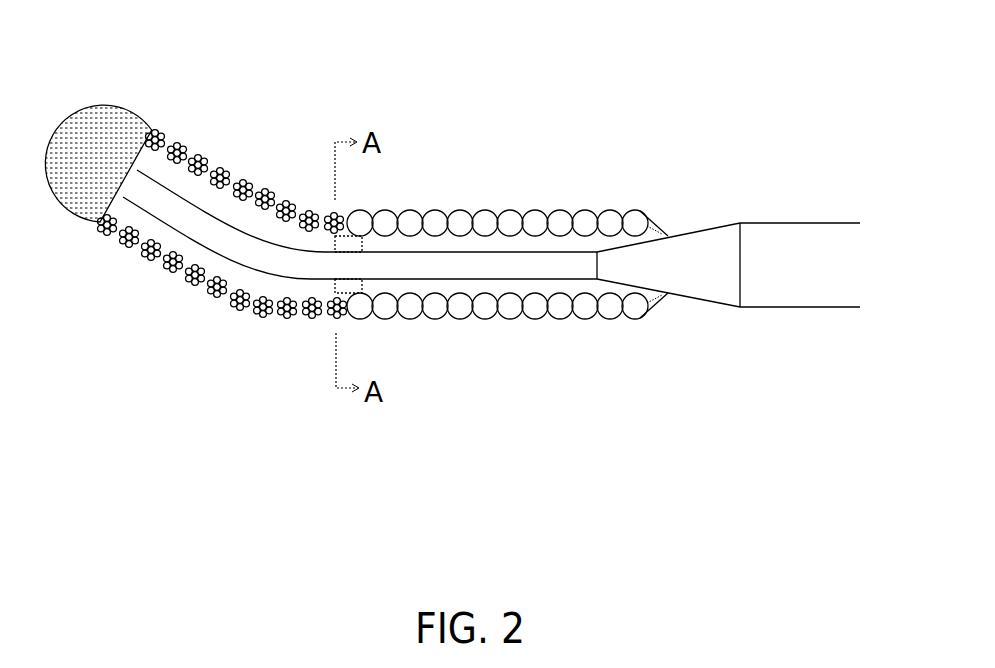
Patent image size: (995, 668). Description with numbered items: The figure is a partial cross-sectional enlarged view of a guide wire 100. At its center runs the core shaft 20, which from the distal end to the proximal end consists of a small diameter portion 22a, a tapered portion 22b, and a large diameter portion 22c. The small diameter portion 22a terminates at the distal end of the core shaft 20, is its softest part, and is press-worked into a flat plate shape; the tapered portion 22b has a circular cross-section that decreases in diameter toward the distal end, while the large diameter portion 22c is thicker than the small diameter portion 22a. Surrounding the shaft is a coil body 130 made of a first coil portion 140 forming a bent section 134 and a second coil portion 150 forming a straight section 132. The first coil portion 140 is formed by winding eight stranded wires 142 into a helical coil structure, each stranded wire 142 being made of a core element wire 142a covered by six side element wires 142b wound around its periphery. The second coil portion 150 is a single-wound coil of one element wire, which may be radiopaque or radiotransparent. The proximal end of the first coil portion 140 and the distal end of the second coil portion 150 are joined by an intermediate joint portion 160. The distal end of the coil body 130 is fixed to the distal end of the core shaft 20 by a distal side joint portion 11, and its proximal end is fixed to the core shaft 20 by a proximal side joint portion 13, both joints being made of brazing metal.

The guide wire 100 is at (590, 147).
The distal side joint portion 11 is at (88, 106).
The core shaft 20 is at (782, 325).
The small diameter portion 22a is at (176, 224).
The tapered portion 22b is at (690, 298).
The large diameter portion 22c is at (778, 221).
The bent section 134 is at (327, 202).
The first coil portion 140 is at (245, 182).
The stranded wires 142 is at (313, 320).
The core element wire 142a is at (227, 307).
The side element wires 142b is at (235, 310).
The coil body 130 is at (538, 352).
The straight section 132 is at (645, 198).
The second coil portion 150 is at (497, 264).
The intermediate joint portion 160 is at (362, 290).
The proximal side joint portion 13 is at (660, 228).